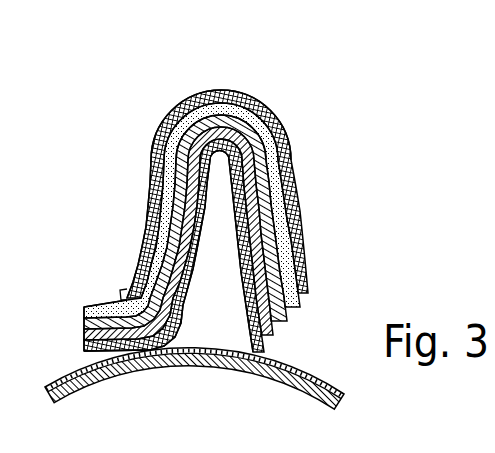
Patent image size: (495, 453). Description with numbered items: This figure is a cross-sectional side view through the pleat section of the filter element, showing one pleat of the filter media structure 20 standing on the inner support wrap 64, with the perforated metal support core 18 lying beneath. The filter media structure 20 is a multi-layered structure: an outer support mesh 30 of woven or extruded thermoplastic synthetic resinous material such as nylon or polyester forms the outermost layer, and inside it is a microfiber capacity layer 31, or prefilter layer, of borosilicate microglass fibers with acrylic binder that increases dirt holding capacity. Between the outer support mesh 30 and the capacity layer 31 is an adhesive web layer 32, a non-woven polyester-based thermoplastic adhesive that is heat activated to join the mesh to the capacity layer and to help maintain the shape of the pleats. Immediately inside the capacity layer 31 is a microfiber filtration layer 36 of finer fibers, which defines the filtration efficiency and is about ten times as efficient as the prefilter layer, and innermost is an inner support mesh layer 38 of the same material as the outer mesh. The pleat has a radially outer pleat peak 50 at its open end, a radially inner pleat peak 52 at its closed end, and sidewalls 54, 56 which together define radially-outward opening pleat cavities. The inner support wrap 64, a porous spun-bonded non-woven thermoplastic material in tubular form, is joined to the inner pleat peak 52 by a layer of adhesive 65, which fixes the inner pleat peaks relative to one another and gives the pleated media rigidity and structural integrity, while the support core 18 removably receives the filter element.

The perforated metal support core 18 is at (200, 382).
The filter media structure 20 is at (220, 204).
The outer support mesh 30 is at (282, 129).
The microfiber capacity layer 31 is at (264, 190).
The adhesive web layer 32 is at (279, 230).
The microfiber filtration layer 36 is at (262, 270).
The inner support mesh layer 38 is at (250, 291).
The radially outer pleat peak 50 is at (216, 90).
The radially inner pleat peak 52 is at (112, 322).
The pleat sidewall 54 is at (148, 200).
The pleat sidewall 56 is at (288, 150).
The inner support wrap 64 is at (213, 363).
The layer of adhesive 65 is at (295, 367).